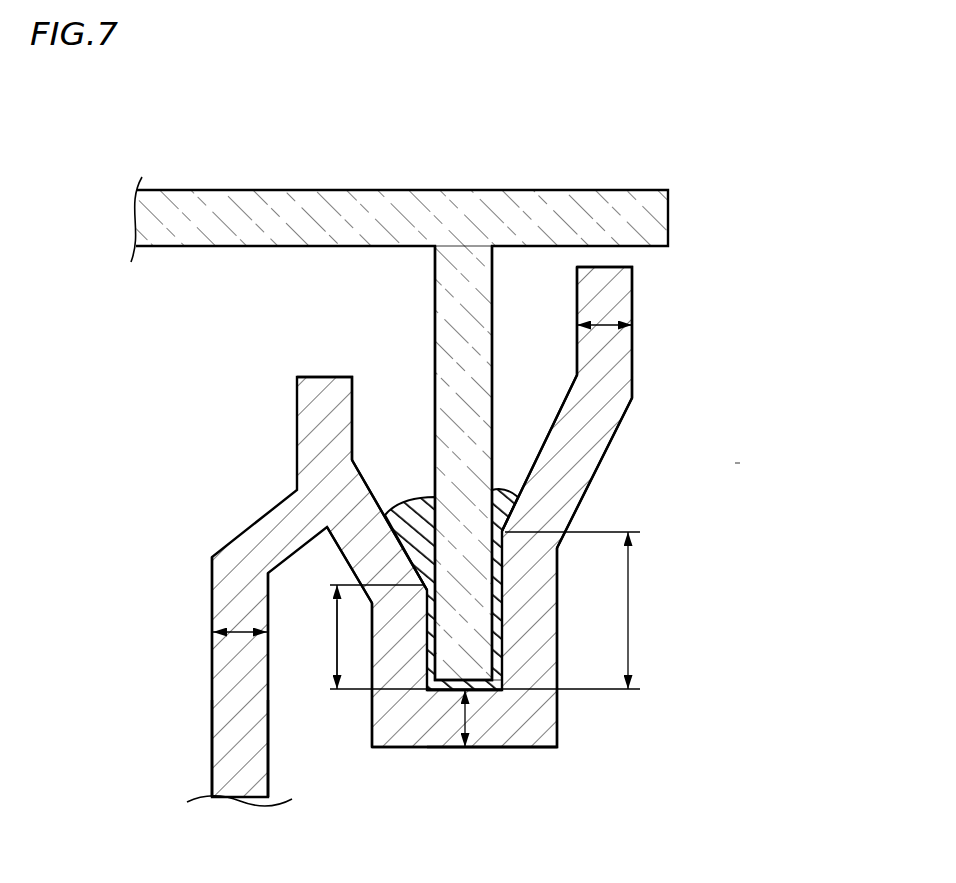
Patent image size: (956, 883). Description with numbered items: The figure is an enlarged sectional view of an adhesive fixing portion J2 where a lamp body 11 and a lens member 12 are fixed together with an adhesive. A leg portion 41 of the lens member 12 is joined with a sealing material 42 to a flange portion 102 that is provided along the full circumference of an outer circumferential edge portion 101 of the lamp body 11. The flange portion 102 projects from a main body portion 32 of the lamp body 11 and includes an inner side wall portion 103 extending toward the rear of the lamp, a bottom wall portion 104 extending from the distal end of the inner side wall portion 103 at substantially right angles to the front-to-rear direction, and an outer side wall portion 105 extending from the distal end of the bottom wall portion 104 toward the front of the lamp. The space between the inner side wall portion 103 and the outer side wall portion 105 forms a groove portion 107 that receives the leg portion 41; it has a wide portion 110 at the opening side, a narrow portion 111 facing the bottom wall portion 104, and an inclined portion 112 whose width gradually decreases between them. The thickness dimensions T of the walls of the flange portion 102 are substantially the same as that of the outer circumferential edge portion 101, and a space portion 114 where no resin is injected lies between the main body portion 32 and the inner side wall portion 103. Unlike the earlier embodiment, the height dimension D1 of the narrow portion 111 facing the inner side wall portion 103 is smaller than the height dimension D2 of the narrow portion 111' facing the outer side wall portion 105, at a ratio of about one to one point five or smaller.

The lens member 12 is at (338, 192).
The leg portion 41 is at (485, 303).
The groove portion 107 is at (519, 366).
The wide portion 110 is at (352, 403).
The inclined portion 112 is at (379, 492).
The sealing material 42 is at (503, 492).
The outer circumferential edge portion 101 is at (278, 460).
The outer side wall portion 105 is at (606, 447).
The narrow portion 111' is at (576, 576).
The adhesive fixing portion J2 is at (734, 463).
The thickness dimension T is at (632, 322).
The space portion 114 is at (330, 629).
The height dimension D1 is at (337, 646).
The height dimension D2 is at (587, 610).
The main body portion 32 is at (230, 695).
The lamp body 11 is at (225, 765).
The inner side wall portion 103 is at (371, 729).
The narrow portion 111 is at (442, 758).
The bottom wall portion 104 is at (513, 730).
The flange portion 102 is at (612, 740).